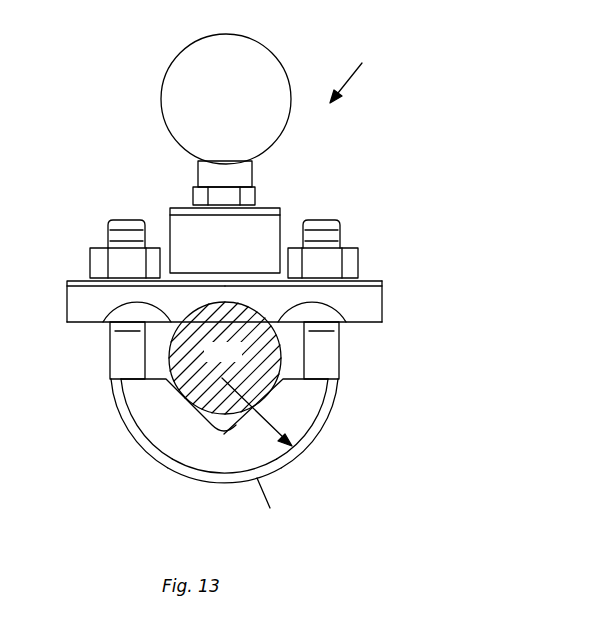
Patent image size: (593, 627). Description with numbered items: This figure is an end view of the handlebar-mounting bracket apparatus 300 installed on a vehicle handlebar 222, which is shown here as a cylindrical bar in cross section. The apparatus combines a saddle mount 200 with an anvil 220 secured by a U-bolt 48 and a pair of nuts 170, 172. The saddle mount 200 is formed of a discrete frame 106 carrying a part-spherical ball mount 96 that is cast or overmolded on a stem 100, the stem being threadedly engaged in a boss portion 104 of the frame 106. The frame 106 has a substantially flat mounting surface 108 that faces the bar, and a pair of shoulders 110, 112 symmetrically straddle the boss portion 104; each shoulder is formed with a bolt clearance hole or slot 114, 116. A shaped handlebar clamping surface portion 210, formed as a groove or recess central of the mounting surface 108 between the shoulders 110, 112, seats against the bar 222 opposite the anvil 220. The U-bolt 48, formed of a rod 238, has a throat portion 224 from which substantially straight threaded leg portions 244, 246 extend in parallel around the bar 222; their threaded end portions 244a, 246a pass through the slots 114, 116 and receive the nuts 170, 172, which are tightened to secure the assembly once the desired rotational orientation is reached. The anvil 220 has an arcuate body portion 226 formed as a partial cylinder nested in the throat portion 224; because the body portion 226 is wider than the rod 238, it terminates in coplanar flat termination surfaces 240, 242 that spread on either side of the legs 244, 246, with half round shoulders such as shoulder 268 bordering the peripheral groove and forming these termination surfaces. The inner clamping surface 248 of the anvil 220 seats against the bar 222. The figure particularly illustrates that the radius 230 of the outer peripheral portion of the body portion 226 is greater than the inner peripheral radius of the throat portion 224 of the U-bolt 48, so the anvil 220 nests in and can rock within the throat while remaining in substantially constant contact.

The part-spherical ball mount 96 is at (277, 85).
The handlebar-mounting bracket apparatus 300 is at (355, 72).
The stem 100 is at (212, 177).
The boss portion 104 is at (262, 214).
The threaded end portion 244a is at (110, 222).
The threaded end portion 246a is at (333, 273).
The nut 170 is at (97, 250).
The nut 172 is at (358, 263).
The bolt clearance hole or slot 114 is at (117, 278).
The bolt clearance hole or slot 116 is at (356, 248).
The frame 106 is at (83, 313).
The saddle mount 200 is at (385, 302).
The mounting surface 108 is at (355, 325).
The shoulder 110 is at (66, 282).
The shoulder 112 is at (380, 280).
The handlebar clamping surface portion 210 is at (103, 326).
The threaded leg portion 244 is at (118, 362).
The threaded leg portion 246 is at (332, 351).
The termination surface 240 is at (104, 378).
The termination surface 242 is at (342, 372).
The vehicle handlebar 222 is at (225, 358).
The radius 230 is at (297, 450).
The inner clamping surface 248 is at (165, 438).
The anvil 220 is at (225, 460).
The throat portion 224 is at (320, 427).
The half round shoulder 268 is at (137, 407).
The arcuate body portion 226 is at (198, 458).
The rod 238 is at (332, 407).
The U-bolt 48 is at (274, 502).